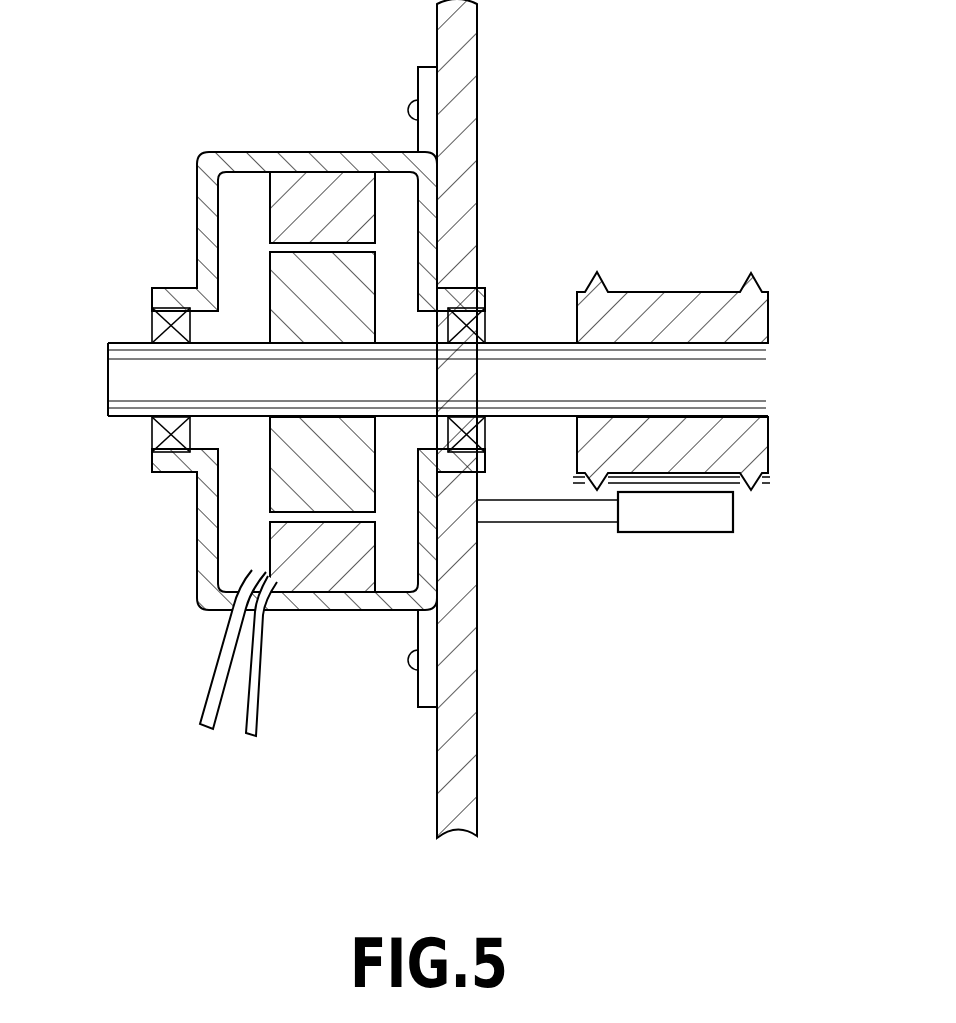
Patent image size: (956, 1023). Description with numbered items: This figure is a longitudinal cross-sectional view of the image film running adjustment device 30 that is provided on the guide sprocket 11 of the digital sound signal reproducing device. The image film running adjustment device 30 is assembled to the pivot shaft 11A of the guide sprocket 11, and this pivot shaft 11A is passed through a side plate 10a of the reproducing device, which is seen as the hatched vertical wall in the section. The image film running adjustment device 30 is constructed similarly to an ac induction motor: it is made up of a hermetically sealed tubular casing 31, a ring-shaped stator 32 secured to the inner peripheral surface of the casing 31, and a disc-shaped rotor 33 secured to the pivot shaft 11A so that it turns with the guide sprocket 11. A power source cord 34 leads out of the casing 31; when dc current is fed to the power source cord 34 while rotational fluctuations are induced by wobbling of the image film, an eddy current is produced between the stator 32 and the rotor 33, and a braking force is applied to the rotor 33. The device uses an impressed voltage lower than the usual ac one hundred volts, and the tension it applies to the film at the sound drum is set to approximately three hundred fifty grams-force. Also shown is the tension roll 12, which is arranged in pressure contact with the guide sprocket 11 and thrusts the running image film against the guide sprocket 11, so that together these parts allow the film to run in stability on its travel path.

The side plate 10a is at (472, 767).
The guide sprocket 11 is at (748, 325).
The pivot shaft 11A is at (748, 392).
The tension roll 12 is at (685, 515).
The image film running adjustment device 30 is at (265, 408).
The casing 31 is at (197, 537).
The stator 32 is at (328, 575).
The rotor 33 is at (347, 487).
The power source cord 34 is at (250, 756).